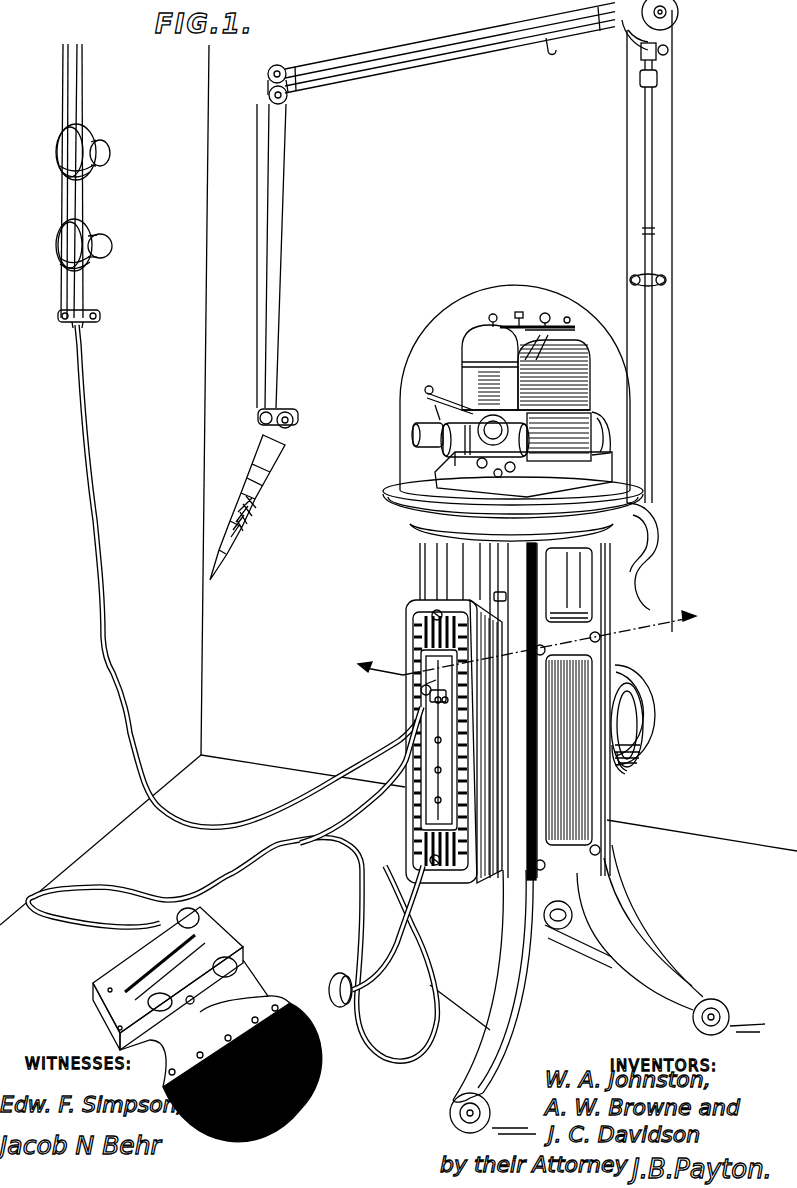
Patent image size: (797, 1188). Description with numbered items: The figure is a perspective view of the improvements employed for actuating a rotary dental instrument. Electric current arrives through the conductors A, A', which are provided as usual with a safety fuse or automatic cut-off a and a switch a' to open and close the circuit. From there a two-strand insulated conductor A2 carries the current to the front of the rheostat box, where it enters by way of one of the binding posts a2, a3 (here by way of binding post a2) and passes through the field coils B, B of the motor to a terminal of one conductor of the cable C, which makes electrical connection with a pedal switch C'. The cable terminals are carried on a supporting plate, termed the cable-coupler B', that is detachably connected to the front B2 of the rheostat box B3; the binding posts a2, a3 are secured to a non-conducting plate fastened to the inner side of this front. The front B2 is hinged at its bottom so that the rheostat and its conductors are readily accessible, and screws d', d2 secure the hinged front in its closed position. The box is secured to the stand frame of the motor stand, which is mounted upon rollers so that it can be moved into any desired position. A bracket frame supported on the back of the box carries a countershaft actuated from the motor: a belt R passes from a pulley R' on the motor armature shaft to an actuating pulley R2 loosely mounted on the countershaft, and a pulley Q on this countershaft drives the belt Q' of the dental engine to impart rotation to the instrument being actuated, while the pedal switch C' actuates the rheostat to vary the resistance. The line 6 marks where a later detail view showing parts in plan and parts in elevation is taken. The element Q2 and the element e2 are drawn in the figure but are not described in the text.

The conductor A is at (51, 181).
The conductor A' is at (92, 181).
The safety fuse a is at (96, 245).
The switch a' is at (100, 152).
The two-strand insulated conductor A2 is at (103, 612).
The binding post a2 is at (418, 688).
The binding post a3 is at (433, 701).
The field coils B is at (524, 367).
The cable-coupler B' is at (418, 740).
The front of the rheostat box B2 is at (410, 636).
The rheostat box B3 is at (567, 709).
The cable C is at (232, 884).
The pedal switch C' is at (179, 1024).
The screw d' is at (412, 612).
The screw d2 is at (430, 860).
The terminal e2 is at (501, 591).
The pulley Q is at (657, 716).
The belt Q' is at (668, 556).
The upright rod Q2 is at (652, 358).
The belt R is at (565, 455).
The pulley R' is at (602, 415).
The actuating pulley R2 is at (621, 772).
The section line 6 is at (535, 652).